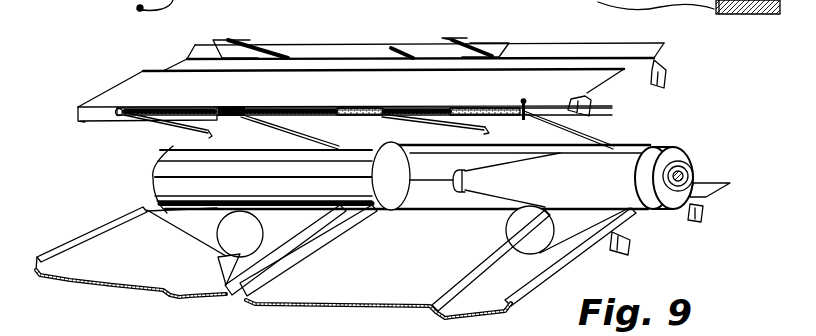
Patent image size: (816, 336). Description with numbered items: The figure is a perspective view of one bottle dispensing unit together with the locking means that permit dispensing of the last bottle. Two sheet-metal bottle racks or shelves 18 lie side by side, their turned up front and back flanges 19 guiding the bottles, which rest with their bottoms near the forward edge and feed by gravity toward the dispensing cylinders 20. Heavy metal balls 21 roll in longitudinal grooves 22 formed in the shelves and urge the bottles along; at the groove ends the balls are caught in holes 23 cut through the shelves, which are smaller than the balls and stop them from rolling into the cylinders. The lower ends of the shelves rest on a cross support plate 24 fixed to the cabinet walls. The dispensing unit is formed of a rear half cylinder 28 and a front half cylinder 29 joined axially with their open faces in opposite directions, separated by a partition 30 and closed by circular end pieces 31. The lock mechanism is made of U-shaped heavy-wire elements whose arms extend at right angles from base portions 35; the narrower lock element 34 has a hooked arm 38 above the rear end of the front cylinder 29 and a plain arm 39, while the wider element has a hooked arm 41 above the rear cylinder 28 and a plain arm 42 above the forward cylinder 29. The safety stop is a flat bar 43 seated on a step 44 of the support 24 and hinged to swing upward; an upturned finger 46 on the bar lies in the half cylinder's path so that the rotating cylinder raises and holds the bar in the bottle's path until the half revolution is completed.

The bottle rack or shelf 18 is at (232, 296).
The turned up front and back flanges 19 is at (60, 258).
The dispensing cylinder 20 is at (650, 136).
The heavy metal ball 21 is at (227, 228).
The longitudinal groove 22 is at (200, 277).
The hole 23 is at (207, 260).
The cross support plate 24 is at (644, 218).
The rear half cylinder 28 is at (167, 187).
The front half cylinder 29 is at (432, 191).
The partition 30 is at (390, 192).
The circular end piece 31 is at (677, 151).
The narrower lock element 34 is at (320, 107).
The base portion 35 is at (242, 107).
The hooked arm 38 is at (486, 133).
The plain arm 39 is at (322, 137).
The hooked arm 41 is at (210, 133).
The plain arm 42 is at (597, 141).
The flat bar 43 is at (586, 50).
The step 44 is at (680, 50).
The finger 46 is at (470, 44).